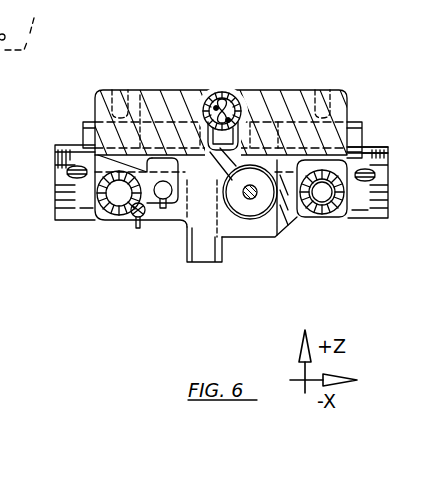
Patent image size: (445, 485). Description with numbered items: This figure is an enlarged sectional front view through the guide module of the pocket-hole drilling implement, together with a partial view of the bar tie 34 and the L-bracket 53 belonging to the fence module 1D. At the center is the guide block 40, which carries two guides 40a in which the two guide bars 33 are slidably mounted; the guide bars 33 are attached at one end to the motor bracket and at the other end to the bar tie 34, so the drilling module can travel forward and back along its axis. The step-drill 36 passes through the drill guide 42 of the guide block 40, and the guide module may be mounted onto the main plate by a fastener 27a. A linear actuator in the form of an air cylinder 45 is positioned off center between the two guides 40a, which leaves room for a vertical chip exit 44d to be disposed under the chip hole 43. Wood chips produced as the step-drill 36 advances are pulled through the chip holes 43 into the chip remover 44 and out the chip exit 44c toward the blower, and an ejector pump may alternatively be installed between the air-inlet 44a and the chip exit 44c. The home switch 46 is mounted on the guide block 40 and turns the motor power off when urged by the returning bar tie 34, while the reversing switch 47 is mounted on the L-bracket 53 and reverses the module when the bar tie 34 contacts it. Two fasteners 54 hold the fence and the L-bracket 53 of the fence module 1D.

The fence module 1D is at (228, 53).
The guide block 40 is at (202, 106).
The step-drill 36 is at (213, 93).
The drill guide 42 is at (226, 100).
The chip holes 43 is at (236, 122).
The fastener 27a is at (318, 96).
The chip remover 44 is at (353, 120).
The air-inlet 44a is at (84, 142).
The chip exit 44c is at (365, 138).
The vertical chip exit 44d is at (200, 263).
The fasteners 54 is at (82, 180).
The L-bracket 53 is at (362, 218).
The guide bars 33 is at (322, 200).
The guides 40a is at (322, 210).
The air cylinder 45 is at (253, 219).
The bar tie 34 is at (240, 236).
The home switch 46 is at (161, 213).
The reversing switch 47 is at (136, 220).